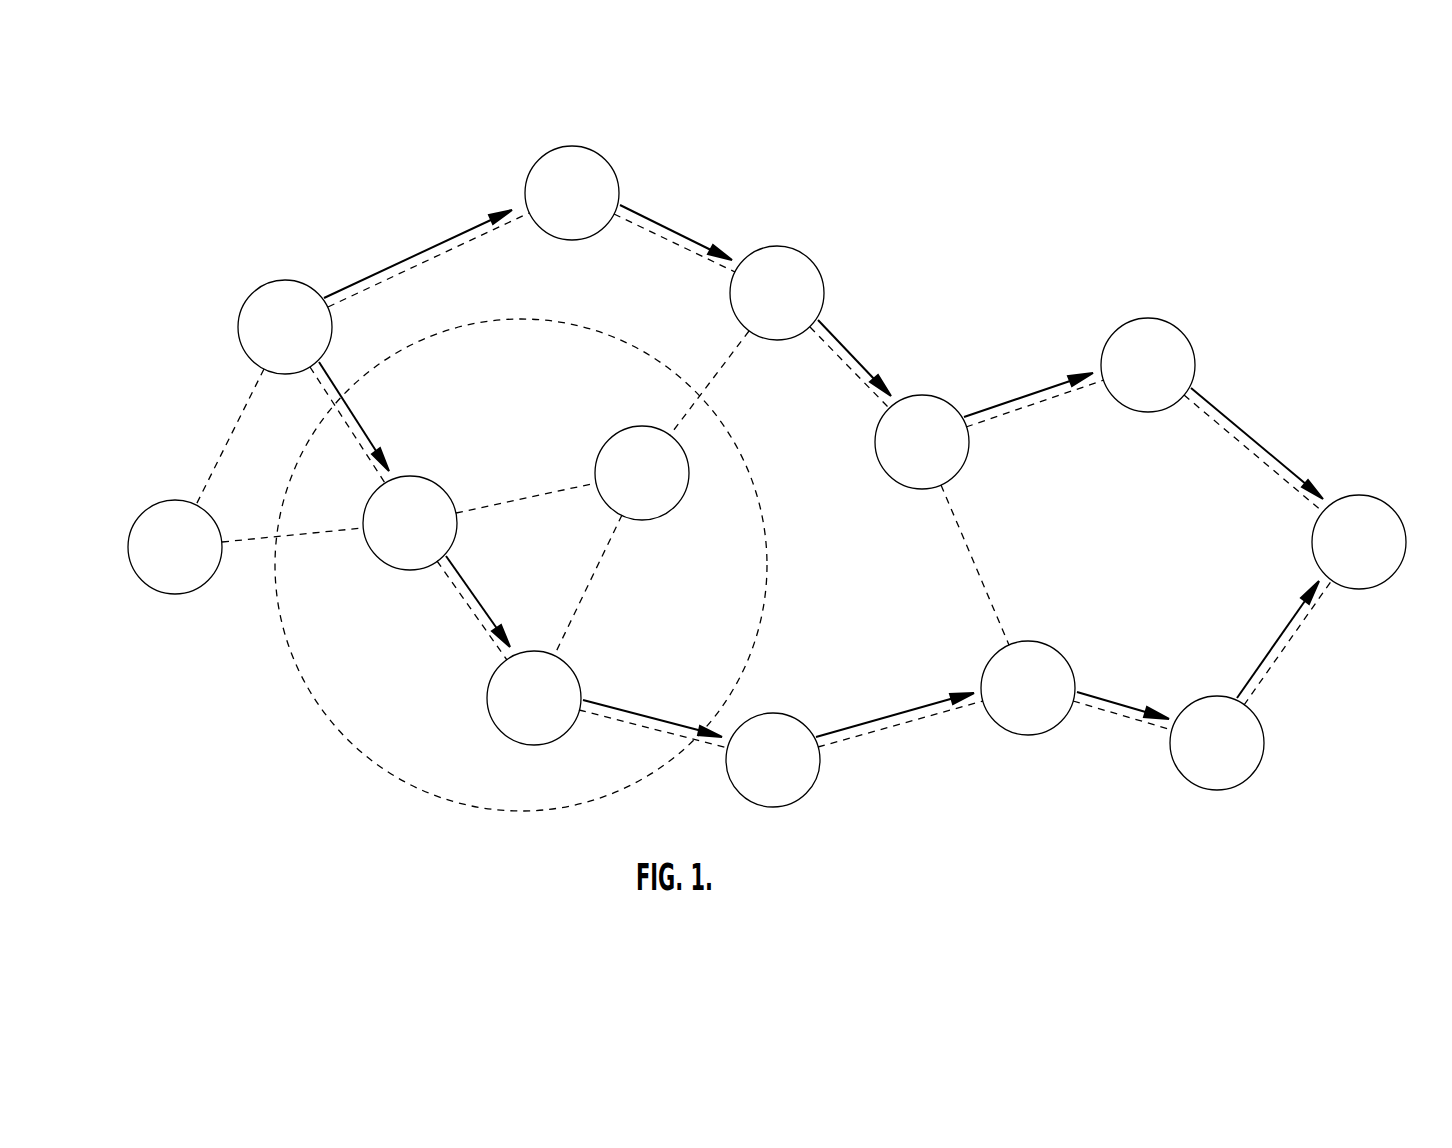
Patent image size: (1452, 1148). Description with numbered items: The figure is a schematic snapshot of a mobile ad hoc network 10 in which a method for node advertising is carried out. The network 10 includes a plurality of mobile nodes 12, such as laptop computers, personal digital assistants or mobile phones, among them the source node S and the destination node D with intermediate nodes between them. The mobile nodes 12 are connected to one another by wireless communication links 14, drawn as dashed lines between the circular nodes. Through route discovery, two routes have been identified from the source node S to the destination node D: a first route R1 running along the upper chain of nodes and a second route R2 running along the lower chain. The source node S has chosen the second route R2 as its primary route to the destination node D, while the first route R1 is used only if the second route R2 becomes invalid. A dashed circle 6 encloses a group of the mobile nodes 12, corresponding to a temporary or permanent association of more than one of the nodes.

The mobile ad hoc network 10 is at (972, 178).
The mobile node 12 is at (256, 287).
The wireless communication link 14 is at (228, 428).
The neighborhood / cluster region 6 is at (427, 795).
The first route R1 is at (423, 242).
The second route R2 is at (352, 402).